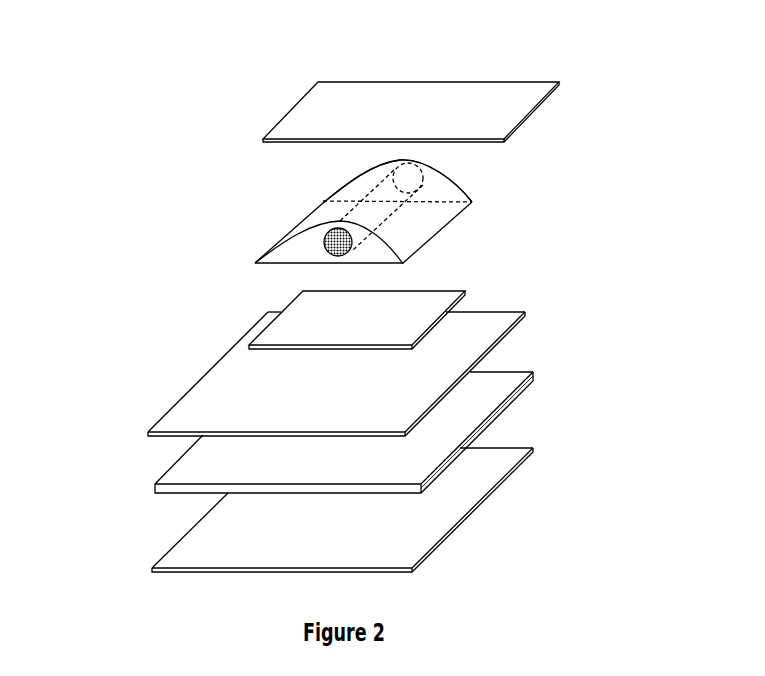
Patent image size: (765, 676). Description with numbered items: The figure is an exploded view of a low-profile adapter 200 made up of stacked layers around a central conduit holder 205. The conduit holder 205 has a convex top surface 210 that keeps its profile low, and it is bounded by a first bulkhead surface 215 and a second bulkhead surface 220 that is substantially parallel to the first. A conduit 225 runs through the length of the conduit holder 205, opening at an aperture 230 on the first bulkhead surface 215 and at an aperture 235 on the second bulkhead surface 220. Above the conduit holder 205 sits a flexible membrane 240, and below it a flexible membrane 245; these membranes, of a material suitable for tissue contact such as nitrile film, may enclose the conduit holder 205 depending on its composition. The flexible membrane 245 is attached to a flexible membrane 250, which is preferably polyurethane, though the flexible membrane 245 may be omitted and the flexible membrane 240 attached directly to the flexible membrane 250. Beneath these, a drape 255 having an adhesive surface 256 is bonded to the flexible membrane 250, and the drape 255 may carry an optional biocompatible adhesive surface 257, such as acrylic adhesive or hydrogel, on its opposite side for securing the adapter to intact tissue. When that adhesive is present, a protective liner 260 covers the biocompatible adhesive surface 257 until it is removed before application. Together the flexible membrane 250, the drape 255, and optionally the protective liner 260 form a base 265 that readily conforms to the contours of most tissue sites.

The low-profile adapter 200 is at (80, 111).
The conduit holder 205 is at (370, 225).
The convex top surface 210 is at (377, 211).
The first bulkhead surface 215 is at (350, 253).
The second bulkhead surface 220 is at (432, 181).
The conduit 225 is at (428, 221).
The aperture 230 is at (275, 259).
The aperture 235 is at (444, 206).
The flexible membrane 240 is at (424, 89).
The flexible membrane 245 is at (410, 305).
The flexible membrane 250 is at (382, 361).
The drape 255 is at (404, 420).
The adhesive surface 256 is at (404, 410).
The biocompatible adhesive surface 257 is at (520, 432).
The protective liner 260 is at (378, 510).
The base 265 is at (150, 565).